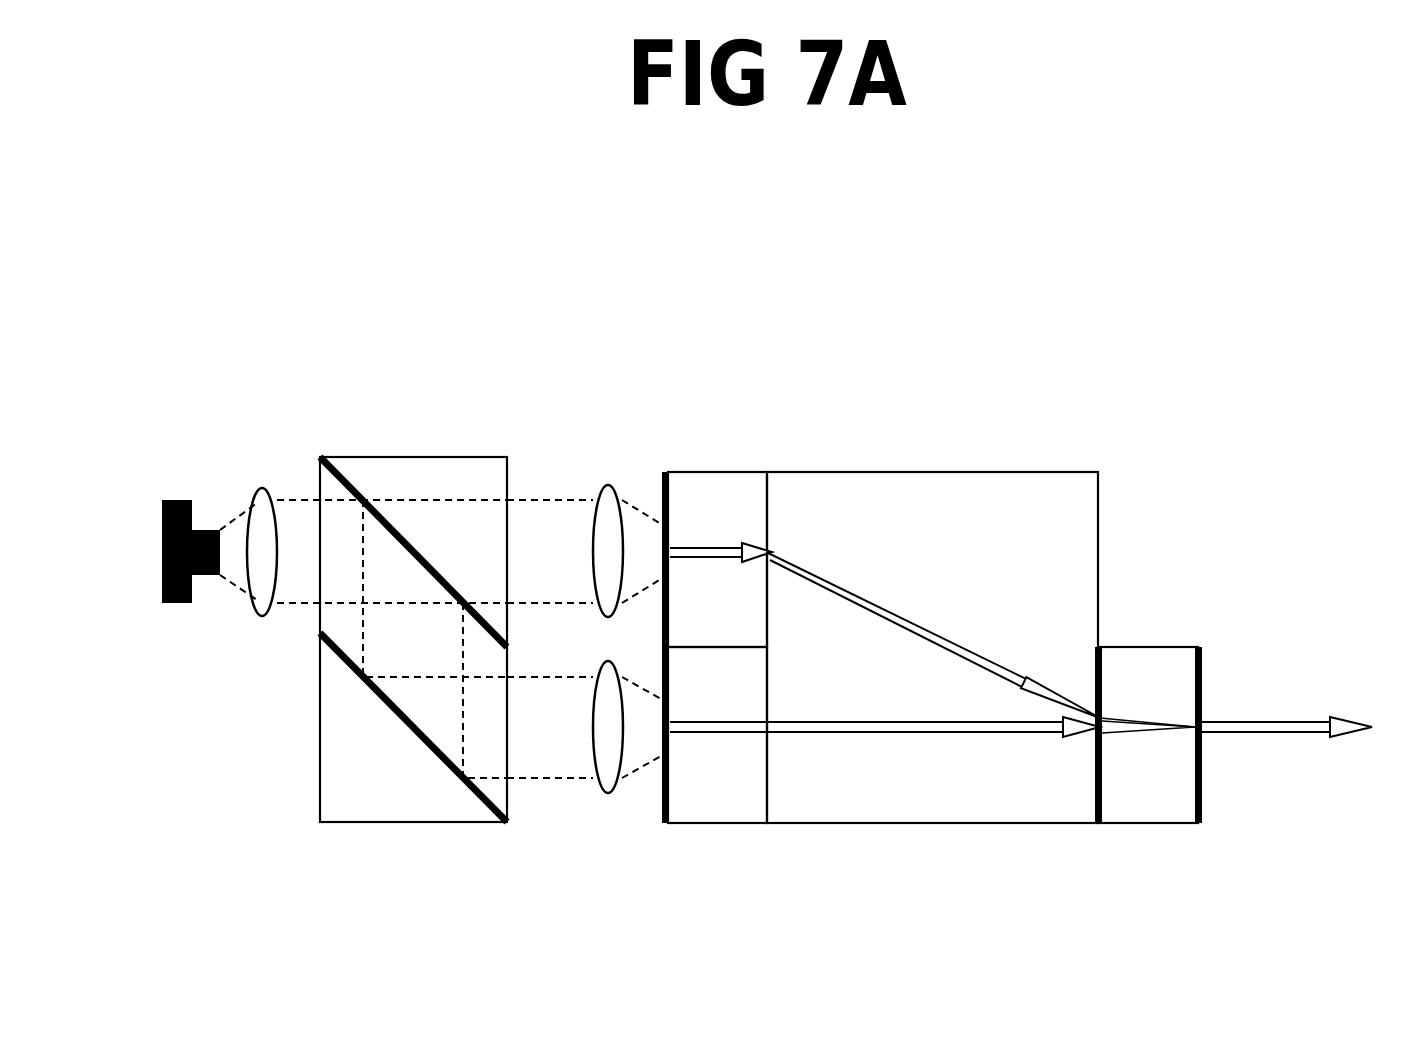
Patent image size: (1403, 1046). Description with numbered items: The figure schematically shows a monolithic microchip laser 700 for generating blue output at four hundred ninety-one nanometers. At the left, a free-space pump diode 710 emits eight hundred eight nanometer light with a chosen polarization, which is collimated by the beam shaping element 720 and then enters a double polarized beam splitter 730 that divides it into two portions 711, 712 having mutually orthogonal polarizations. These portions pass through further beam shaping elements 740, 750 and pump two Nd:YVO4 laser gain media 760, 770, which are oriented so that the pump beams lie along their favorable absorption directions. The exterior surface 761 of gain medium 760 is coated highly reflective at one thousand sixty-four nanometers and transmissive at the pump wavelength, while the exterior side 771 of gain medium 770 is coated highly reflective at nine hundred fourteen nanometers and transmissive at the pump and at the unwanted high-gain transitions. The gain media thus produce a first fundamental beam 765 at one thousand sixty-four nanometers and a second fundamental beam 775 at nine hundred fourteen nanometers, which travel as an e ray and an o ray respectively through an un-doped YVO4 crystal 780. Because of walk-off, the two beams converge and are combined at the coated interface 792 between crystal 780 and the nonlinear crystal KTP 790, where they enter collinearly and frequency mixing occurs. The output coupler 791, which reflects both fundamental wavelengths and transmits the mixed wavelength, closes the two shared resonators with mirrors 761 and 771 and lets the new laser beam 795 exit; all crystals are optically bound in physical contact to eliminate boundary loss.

The monolithic microchip laser 700 is at (756, 583).
The free-space pump diode 710 is at (198, 514).
The beam shaping element 720 is at (244, 593).
The double PBS 730 is at (392, 681).
The first portion of pump light 711 is at (550, 551).
The second portion of pump light 712 is at (550, 727).
The beam shaping element 740 is at (616, 521).
The beam shaping element 750 is at (615, 761).
The exterior surface of gain medium 761 is at (691, 530).
The exterior side of gain medium 771 is at (691, 761).
The Nd:YVO4 laser gain medium 760 is at (720, 559).
The Nd:YVO4 laser gain medium 770 is at (717, 735).
The first fundamental beam 765 is at (980, 633).
The second fundamental beam 775 is at (932, 698).
The un-doped YVO4 crystal 780 is at (932, 647).
The nonlinear crystal KTP 790 is at (1148, 735).
The output coupler 791 is at (1240, 739).
The interface coating 792 is at (1107, 769).
The output laser beam 795 is at (1287, 700).